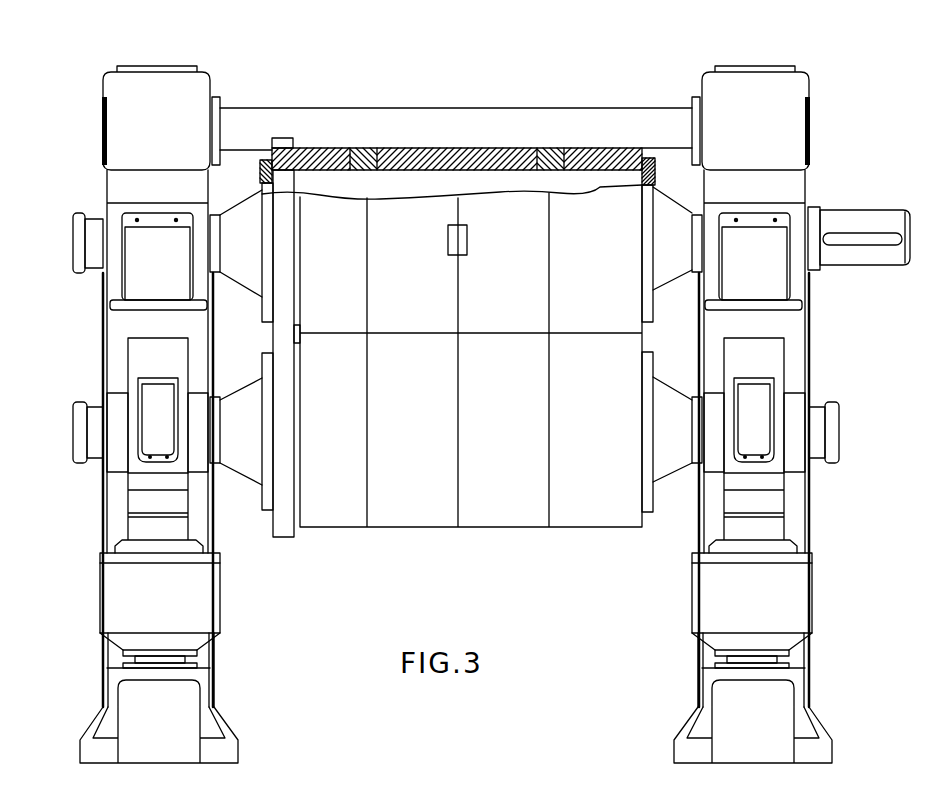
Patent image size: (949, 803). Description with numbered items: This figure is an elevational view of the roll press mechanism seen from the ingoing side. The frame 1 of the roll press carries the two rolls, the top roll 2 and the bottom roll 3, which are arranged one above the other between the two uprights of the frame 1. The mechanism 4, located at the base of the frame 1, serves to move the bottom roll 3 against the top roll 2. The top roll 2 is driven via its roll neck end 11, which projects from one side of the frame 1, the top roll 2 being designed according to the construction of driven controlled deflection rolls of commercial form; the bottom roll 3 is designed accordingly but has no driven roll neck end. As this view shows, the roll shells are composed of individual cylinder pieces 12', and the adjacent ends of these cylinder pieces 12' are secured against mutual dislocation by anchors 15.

The frame 1 is at (115, 493).
The top roll 2 is at (668, 213).
The bottom roll 3 is at (677, 450).
The mechanism for moving the bottom roll 4 is at (117, 606).
The roll neck end 11 is at (876, 218).
The cylinder pieces 12' is at (452, 325).
The anchors 15 is at (460, 237).